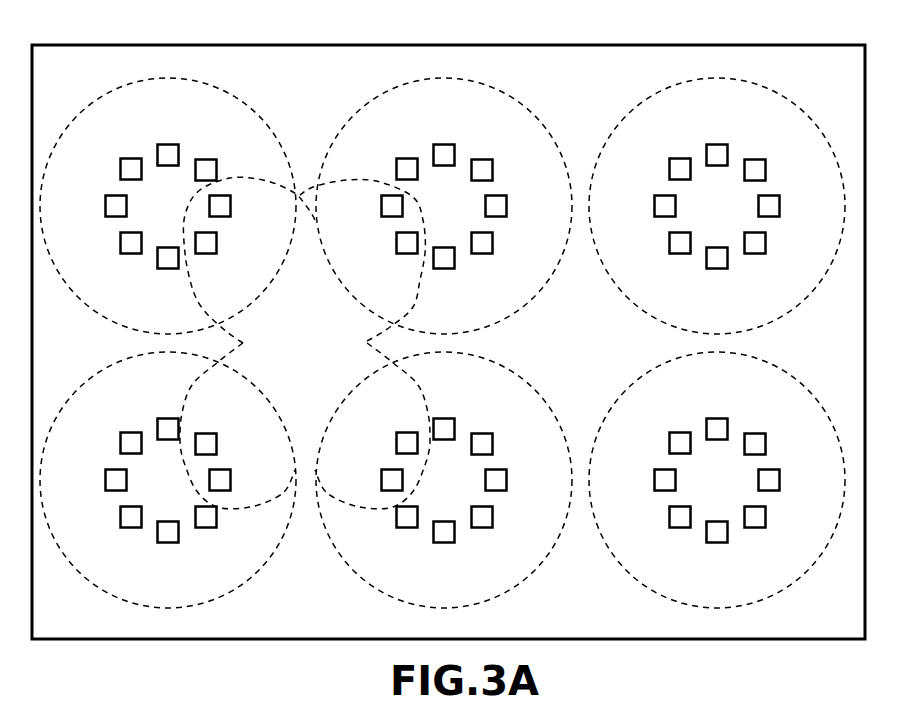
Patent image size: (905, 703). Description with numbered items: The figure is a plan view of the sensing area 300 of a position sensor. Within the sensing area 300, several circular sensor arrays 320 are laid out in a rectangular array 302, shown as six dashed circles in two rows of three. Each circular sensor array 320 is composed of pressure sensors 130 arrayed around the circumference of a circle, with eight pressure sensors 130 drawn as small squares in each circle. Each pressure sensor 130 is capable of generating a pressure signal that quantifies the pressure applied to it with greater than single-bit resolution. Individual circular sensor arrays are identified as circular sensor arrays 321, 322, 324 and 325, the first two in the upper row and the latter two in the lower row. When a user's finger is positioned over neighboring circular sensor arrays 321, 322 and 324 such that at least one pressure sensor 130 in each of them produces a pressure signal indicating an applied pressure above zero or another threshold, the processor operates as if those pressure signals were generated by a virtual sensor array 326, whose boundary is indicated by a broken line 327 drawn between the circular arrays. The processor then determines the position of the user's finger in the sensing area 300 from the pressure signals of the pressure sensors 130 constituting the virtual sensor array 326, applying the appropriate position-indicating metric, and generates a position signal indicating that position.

The pressure sensor 130 is at (443, 342).
The sensing area 300 is at (562, 365).
The rectangular array 302 is at (611, 60).
The circular sensor array 320 is at (442, 350).
The circular sensor array 321 is at (270, 125).
The circular sensor array 322 is at (348, 122).
The circular sensor array 324 is at (257, 574).
The fourth cluster region 325 is at (352, 574).
The virtual sensor array 326 is at (283, 314).
The broken line 327 is at (372, 351).